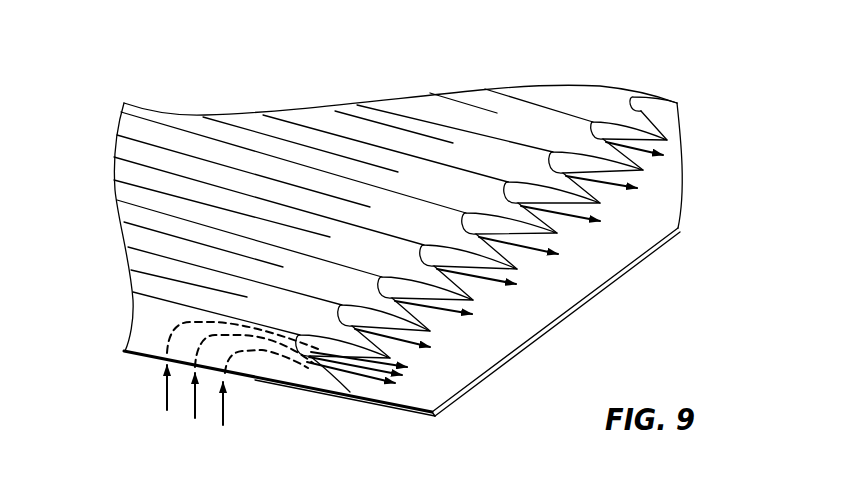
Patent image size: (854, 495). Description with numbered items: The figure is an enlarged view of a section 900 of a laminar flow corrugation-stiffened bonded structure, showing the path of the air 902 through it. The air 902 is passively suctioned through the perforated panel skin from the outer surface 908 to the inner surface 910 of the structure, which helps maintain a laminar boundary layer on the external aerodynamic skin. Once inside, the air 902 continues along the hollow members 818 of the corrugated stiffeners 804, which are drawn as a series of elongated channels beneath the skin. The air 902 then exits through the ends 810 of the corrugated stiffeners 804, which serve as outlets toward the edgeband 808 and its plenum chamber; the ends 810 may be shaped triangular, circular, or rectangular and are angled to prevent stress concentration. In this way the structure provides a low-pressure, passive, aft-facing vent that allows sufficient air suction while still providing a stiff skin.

The section 900 is at (694, 48).
The corrugated stiffeners 804 is at (150, 150).
The hollow members 818 is at (384, 206).
The ends 810 is at (553, 150).
The edgeband 808 is at (668, 205).
The air 902 is at (613, 190).
The inner surface 910 is at (518, 326).
The outer surface 908 is at (131, 359).